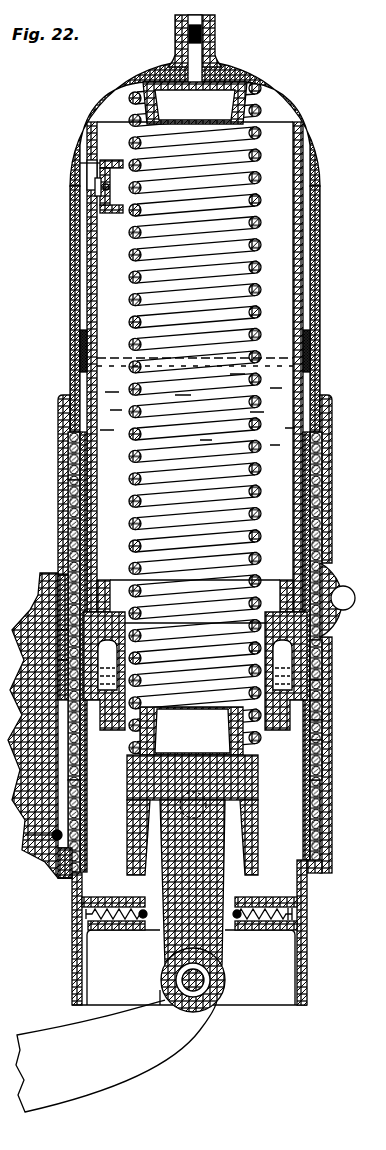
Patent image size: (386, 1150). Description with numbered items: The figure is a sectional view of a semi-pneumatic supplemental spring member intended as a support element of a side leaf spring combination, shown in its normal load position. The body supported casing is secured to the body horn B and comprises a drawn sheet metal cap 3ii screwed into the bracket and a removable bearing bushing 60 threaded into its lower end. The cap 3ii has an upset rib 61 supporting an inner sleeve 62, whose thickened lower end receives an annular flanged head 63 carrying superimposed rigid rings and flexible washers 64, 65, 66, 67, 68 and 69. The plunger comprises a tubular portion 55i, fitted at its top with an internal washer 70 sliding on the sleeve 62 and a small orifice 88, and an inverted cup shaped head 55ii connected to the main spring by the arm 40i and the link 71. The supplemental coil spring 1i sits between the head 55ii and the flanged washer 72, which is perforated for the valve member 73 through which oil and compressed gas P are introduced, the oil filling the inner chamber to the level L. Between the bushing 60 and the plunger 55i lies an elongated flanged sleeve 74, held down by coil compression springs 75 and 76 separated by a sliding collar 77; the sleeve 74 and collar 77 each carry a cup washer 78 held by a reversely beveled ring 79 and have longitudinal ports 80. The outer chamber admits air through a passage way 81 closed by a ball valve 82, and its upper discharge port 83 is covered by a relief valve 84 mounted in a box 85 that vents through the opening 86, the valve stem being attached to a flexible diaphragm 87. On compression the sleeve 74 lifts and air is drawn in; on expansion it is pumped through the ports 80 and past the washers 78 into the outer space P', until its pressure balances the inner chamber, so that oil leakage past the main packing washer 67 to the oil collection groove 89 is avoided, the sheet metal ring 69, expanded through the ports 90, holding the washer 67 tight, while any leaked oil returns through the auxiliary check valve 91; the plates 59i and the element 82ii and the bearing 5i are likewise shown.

The supplemental coil spring 1i is at (261, 312).
The drawn sheet metal cap 3ii is at (70, 270).
The ball bearing 5i is at (62, 457).
The arm 40i is at (197, 1018).
The tubular portion of plunger 55i is at (77, 392).
The inverted cup shaped head 55ii is at (308, 965).
The spring plate 59i is at (265, 947).
The bearing bushing 60 is at (65, 875).
The upset rib 61 is at (308, 170).
The inner sleeve 62 is at (92, 304).
The annular flanged head 63 is at (110, 580).
The rigid ring 64 is at (286, 580).
The flexible packing ring 65 is at (326, 641).
The rigid ring 66 is at (312, 694).
The main packing washer 67 is at (312, 710).
The rigid ring 68 is at (312, 729).
The flexible sheet metal ring 69 is at (312, 750).
The internal washer 70 is at (76, 340).
The link 71 is at (158, 975).
The flanged plate or washer 72 is at (245, 70).
The valve member 73 is at (195, 53).
The elongated flanged sleeve 74 is at (82, 830).
The coil compression spring 75 is at (75, 697).
The coil compression spring 76 is at (70, 503).
The sliding collar 77 is at (66, 650).
The cup washer 78 is at (66, 631).
The reversely beveled ring 79 is at (62, 611).
The longitudinal ports 80 is at (70, 657).
The passage way 81 is at (50, 838).
The ball valve 82 is at (62, 857).
The foot 82ii is at (346, 855).
The discharge port 83 is at (96, 186).
The relief valve 84 is at (98, 197).
The valve box 85 is at (110, 163).
The vent opening 86 is at (82, 162).
The flexible diaphragm 87 is at (112, 214).
The orifice 88 is at (312, 360).
The oil collection groove 89 is at (300, 673).
The ports 90 is at (280, 748).
The auxiliary check valve 91 is at (112, 745).
The compressed gas P is at (195, 185).
The outer auxiliary spring chamber P' is at (323, 367).
The oil level L is at (70, 357).
The body horn B is at (36, 757).